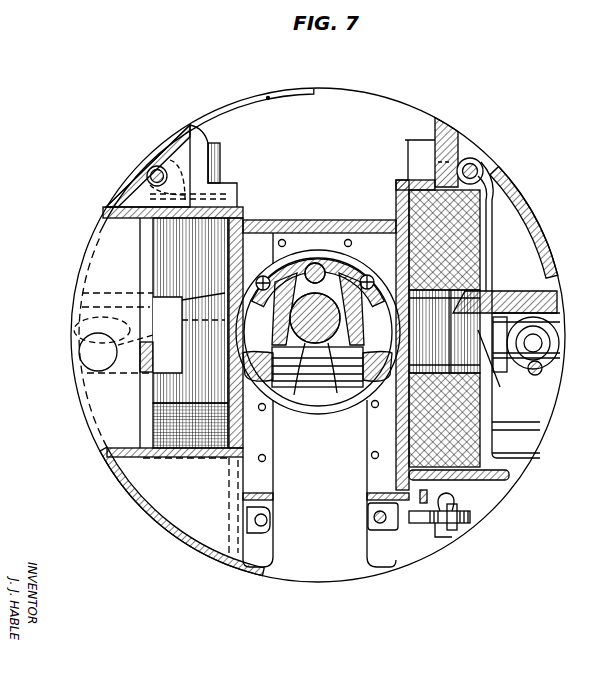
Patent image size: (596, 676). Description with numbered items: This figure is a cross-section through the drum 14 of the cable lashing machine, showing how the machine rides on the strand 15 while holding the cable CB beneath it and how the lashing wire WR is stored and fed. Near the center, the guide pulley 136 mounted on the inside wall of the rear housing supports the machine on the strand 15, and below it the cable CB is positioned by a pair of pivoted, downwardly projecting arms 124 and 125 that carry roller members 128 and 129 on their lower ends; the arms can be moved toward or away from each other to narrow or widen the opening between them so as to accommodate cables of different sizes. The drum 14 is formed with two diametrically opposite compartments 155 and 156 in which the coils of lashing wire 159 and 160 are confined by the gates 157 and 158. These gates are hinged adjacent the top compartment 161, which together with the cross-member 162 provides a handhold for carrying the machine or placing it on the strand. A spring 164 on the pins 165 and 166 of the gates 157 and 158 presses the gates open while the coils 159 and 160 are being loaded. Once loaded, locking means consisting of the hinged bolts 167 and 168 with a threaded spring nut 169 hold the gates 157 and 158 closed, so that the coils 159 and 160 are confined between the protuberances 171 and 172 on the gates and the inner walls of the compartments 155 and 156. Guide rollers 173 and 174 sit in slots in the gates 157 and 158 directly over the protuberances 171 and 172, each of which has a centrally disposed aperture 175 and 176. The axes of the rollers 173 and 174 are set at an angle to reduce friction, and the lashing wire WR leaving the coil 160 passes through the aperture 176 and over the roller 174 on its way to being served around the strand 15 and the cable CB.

The drum 14 is at (147, 513).
The strand 15 is at (314, 263).
The pivoted arm 124 is at (360, 387).
The pivoted arm 125 is at (277, 387).
The roller member 128 is at (336, 376).
The roller member 129 is at (296, 377).
The guide pulley 136 is at (335, 272).
The compartment 155 is at (112, 282).
The compartment 156 is at (510, 233).
The gate 157 is at (495, 205).
The gate 158 is at (80, 260).
The coil of lashing wire 159 is at (467, 217).
The coil of lashing wire 160 is at (157, 247).
The top compartment 161 is at (363, 100).
The cross-member 162 is at (239, 103).
The spring 164 is at (489, 186).
The pin 165 is at (152, 170).
The pin 166 is at (474, 165).
The hinged bolt 167 is at (447, 537).
The hinged bolt 168 is at (235, 563).
The threaded spring nut 169 is at (480, 517).
The protuberance 171 is at (150, 308).
The protuberance 172 is at (500, 295).
The guide roller 173 is at (557, 348).
The guide roller 174 is at (135, 332).
The aperture 175 is at (76, 352).
The aperture 176 is at (478, 331).
The cable CB is at (317, 389).
The lashing wire WR is at (478, 291).